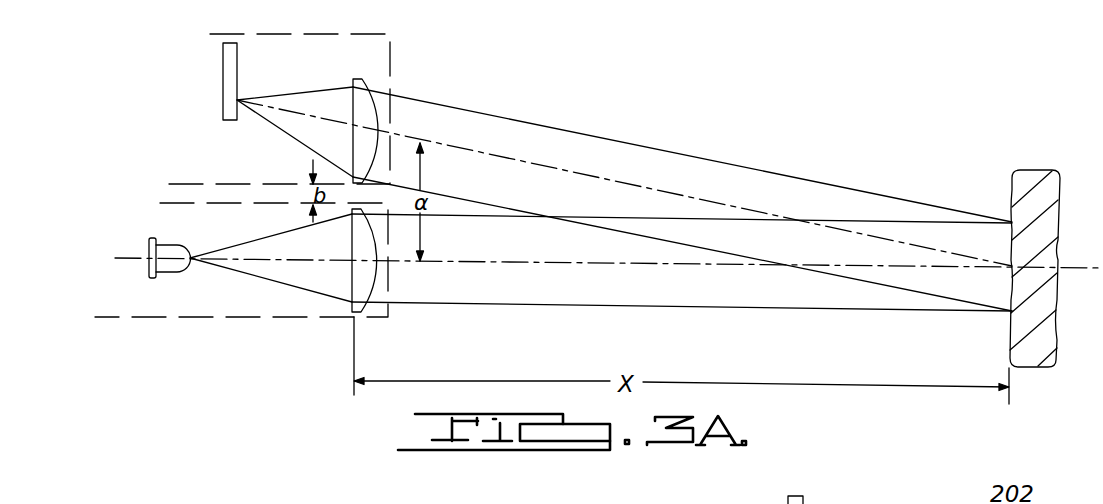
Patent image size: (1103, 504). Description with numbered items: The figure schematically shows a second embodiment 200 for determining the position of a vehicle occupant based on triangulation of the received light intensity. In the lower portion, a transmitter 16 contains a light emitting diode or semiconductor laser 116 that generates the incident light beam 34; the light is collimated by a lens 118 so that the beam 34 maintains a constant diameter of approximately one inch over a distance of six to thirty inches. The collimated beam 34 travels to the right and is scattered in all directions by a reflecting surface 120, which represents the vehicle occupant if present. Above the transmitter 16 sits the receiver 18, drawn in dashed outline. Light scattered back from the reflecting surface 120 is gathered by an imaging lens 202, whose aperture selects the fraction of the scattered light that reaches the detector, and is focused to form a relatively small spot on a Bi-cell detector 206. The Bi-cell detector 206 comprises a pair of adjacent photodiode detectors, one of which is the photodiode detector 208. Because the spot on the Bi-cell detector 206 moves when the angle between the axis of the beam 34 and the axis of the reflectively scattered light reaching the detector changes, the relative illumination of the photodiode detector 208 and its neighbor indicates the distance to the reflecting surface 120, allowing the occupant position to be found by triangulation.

The transmitter 16 is at (208, 319).
The receiver 18 is at (196, 33).
The light beam 34 is at (738, 308).
The light emitting diode or semiconductor laser 116 is at (173, 245).
The lens 118 is at (348, 303).
The reflecting surface 120 is at (1010, 185).
The second embodiment 200 is at (944, 131).
The imaging lens 202 is at (364, 80).
The Bi-cell detector 206 is at (223, 94).
The photodiode detector 208 is at (197, 490).